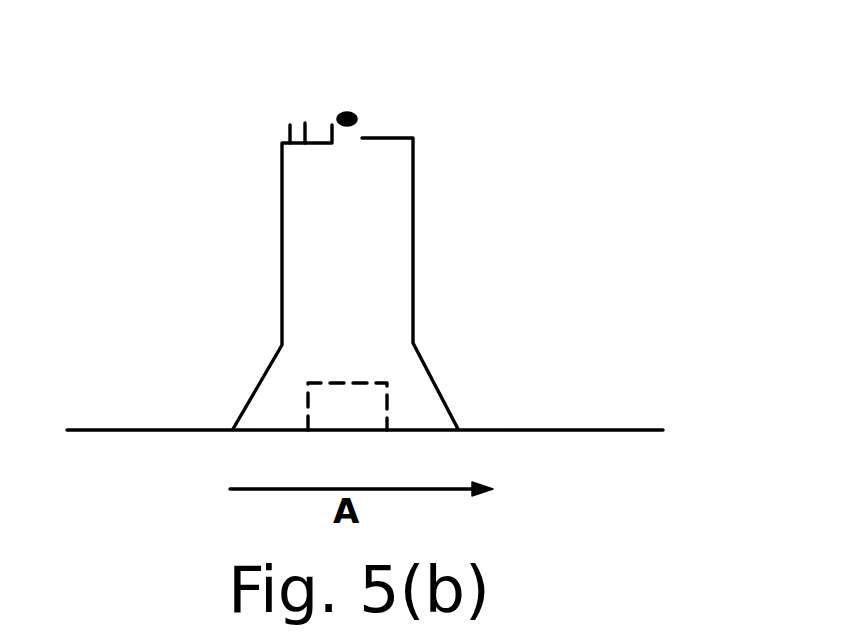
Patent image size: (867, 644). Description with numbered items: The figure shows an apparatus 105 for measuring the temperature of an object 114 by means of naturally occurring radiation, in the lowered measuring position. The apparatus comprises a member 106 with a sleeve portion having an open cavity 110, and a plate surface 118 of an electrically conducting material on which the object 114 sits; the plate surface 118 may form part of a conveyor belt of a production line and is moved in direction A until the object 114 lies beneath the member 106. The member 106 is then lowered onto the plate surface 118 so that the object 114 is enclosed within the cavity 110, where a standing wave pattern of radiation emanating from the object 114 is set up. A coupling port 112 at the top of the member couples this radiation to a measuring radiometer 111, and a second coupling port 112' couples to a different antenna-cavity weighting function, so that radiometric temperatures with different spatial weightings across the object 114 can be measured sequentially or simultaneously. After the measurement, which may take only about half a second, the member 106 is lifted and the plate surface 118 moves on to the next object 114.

The apparatus 105 is at (563, 230).
The member 106 is at (253, 382).
The open cavity 110 is at (417, 313).
The radiometer 111 is at (358, 110).
The coupling port 112 is at (437, 108).
The coupling port 112' is at (310, 82).
The object 114 is at (368, 417).
The plate surface 118 is at (582, 430).